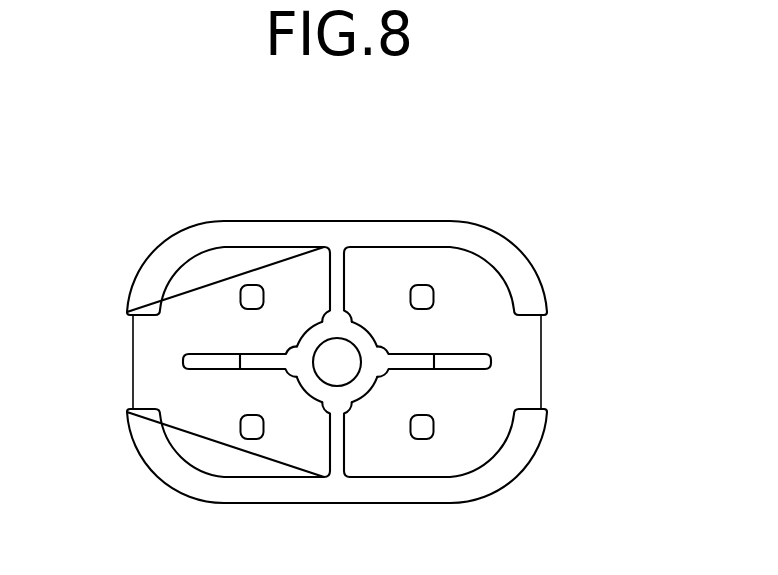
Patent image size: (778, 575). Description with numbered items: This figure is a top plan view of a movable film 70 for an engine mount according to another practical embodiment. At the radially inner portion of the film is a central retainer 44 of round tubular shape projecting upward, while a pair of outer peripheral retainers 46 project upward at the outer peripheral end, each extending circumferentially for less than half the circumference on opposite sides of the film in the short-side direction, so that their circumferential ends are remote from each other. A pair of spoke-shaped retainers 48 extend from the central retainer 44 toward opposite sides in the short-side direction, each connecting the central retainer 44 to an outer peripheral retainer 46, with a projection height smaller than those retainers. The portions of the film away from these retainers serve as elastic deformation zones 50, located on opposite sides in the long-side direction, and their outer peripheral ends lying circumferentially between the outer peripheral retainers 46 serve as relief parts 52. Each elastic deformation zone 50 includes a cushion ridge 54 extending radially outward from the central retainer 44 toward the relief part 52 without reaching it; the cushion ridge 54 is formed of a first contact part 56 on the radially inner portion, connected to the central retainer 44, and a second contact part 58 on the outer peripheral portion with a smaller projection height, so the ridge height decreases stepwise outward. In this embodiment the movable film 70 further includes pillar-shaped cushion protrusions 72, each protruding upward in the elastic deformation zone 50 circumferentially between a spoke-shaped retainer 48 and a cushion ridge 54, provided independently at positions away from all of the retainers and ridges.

The central retainer 44 is at (315, 333).
The outer peripheral retainer 46 is at (481, 248).
The spoke-shaped retainer 48 is at (338, 275).
The elastic deformation zone 50 is at (199, 303).
The relief part 52 is at (145, 348).
The cushion ridge 54 is at (335, 403).
The first contact part 56 is at (261, 365).
The second contact part 58 is at (214, 363).
The movable film 70 is at (335, 363).
The cushion protrusion 72 is at (250, 295).